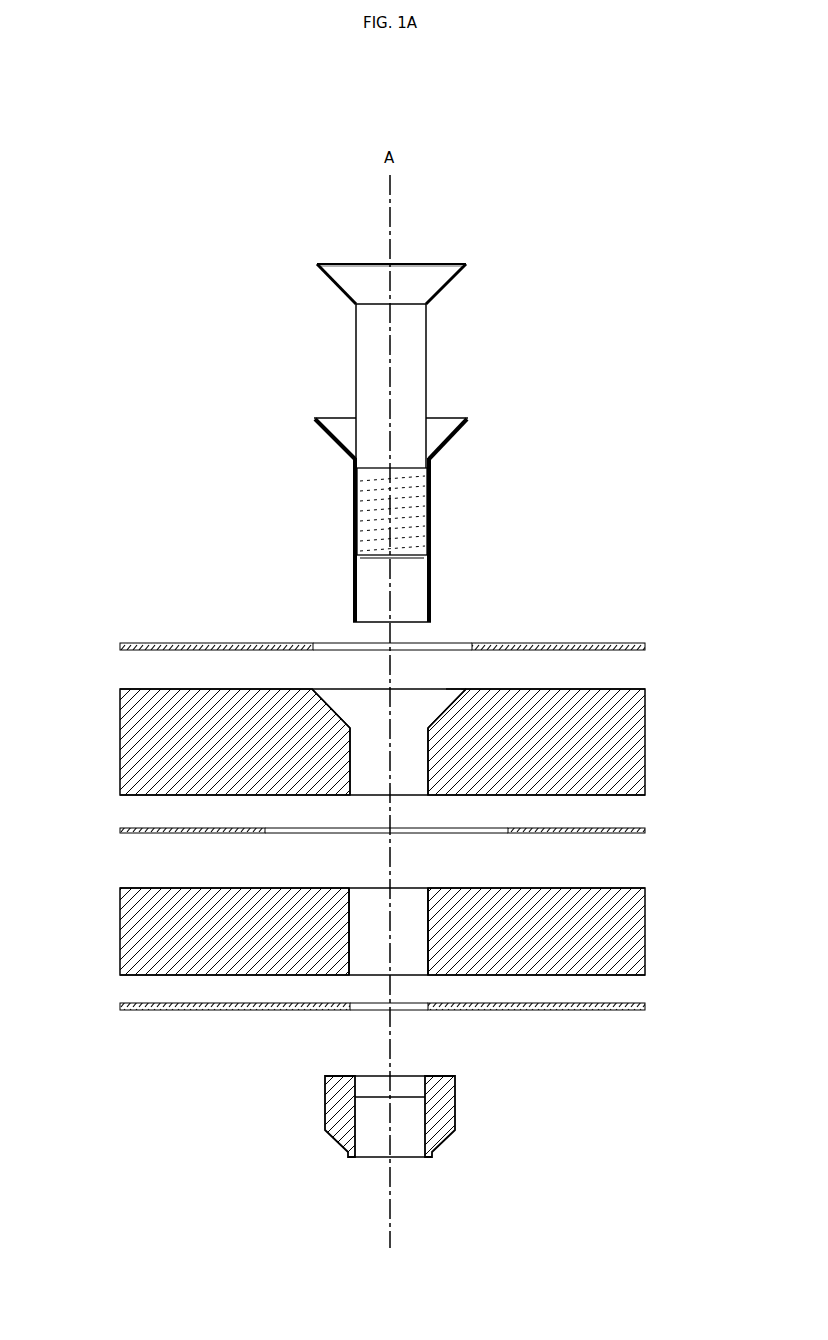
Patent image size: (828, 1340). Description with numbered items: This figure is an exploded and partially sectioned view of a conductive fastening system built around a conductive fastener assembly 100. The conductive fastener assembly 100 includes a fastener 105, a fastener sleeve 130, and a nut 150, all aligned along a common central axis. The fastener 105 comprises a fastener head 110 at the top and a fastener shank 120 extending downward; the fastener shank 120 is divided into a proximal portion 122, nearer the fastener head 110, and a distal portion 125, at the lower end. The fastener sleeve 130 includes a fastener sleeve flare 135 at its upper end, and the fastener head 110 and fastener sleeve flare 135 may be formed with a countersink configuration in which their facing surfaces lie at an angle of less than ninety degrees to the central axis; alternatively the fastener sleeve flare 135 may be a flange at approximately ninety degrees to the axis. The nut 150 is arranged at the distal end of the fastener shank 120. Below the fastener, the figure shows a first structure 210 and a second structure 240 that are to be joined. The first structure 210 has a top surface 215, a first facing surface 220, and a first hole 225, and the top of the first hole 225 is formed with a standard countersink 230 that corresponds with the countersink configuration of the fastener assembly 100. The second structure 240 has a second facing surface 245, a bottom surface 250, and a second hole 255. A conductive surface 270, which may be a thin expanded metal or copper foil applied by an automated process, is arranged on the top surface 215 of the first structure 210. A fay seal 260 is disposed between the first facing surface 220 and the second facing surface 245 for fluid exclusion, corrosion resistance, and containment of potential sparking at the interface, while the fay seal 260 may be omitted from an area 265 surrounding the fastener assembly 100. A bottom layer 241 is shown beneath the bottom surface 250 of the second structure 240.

The conductive fastener assembly 100 is at (410, 107).
The fastener 105 is at (444, 264).
The fastener head 110 is at (347, 255).
The fastener shank 120 is at (497, 386).
The proximal portion 122 is at (287, 386).
The distal portion 125 is at (323, 513).
The fastener sleeve 130 is at (446, 540).
The fastener sleeve flare 135 is at (446, 447).
The nut 150 is at (330, 1116).
The first structure 210 is at (255, 751).
The top surface 215 is at (342, 676).
The first facing surface 220 is at (338, 810).
The first hole 225 is at (365, 728).
The standard countersink 230 is at (490, 681).
The second structure 240 is at (262, 941).
The bottom layer 241 is at (399, 1026).
The second facing surface 245 is at (340, 882).
The bottom surface 250 is at (347, 988).
The second hole 255 is at (360, 915).
The fay seal 260 is at (434, 850).
The area 265 is at (420, 829).
The conductive surface 270 is at (436, 625).